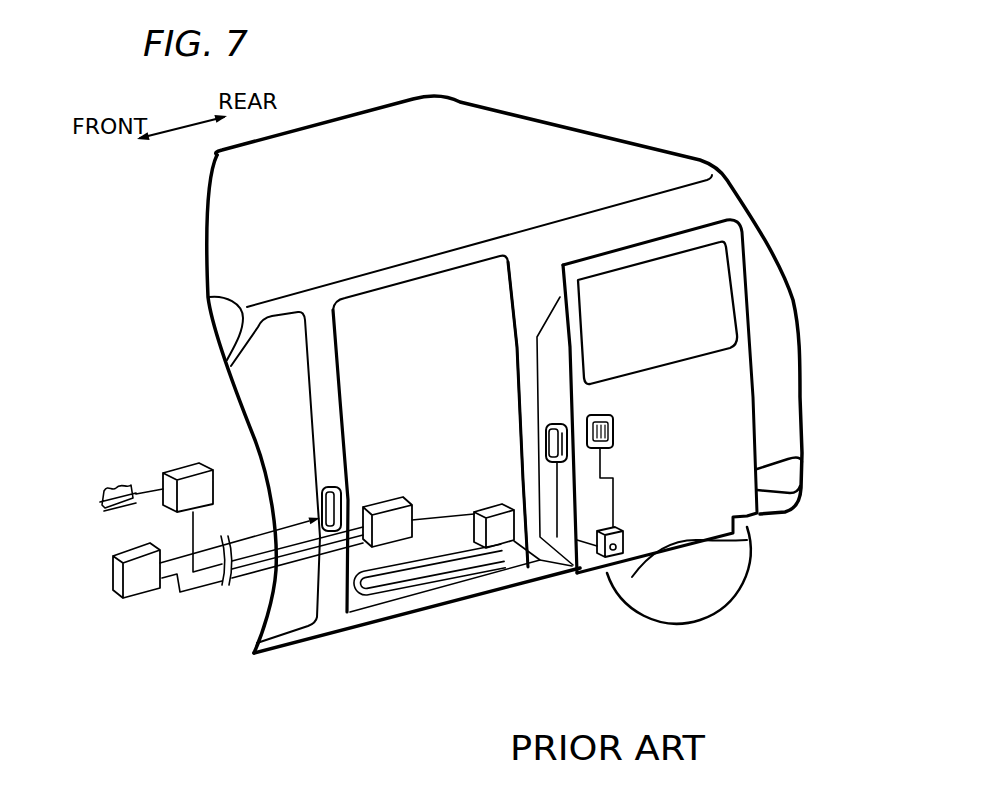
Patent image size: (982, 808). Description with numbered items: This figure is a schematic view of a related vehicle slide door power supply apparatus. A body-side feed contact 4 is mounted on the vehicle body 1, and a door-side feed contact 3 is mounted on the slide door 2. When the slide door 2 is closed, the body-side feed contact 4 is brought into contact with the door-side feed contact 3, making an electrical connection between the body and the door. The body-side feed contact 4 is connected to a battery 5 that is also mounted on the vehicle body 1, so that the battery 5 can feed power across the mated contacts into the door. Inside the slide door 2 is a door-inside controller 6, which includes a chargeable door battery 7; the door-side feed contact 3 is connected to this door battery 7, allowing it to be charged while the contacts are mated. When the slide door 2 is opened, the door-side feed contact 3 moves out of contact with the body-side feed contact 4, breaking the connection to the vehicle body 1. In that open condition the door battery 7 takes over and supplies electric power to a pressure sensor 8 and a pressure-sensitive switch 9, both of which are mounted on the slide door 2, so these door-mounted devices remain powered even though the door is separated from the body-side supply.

The vehicle body 1 is at (333, 607).
The slide door 2 is at (720, 405).
The door-side feed contact 3 is at (546, 423).
The body-side feed contact 4 is at (322, 498).
The battery 5 is at (147, 580).
The door-inside controller 6 is at (627, 531).
The door battery 7 is at (612, 552).
The pressure sensor 8 is at (615, 427).
The pressure-sensitive switch 9 is at (560, 281).